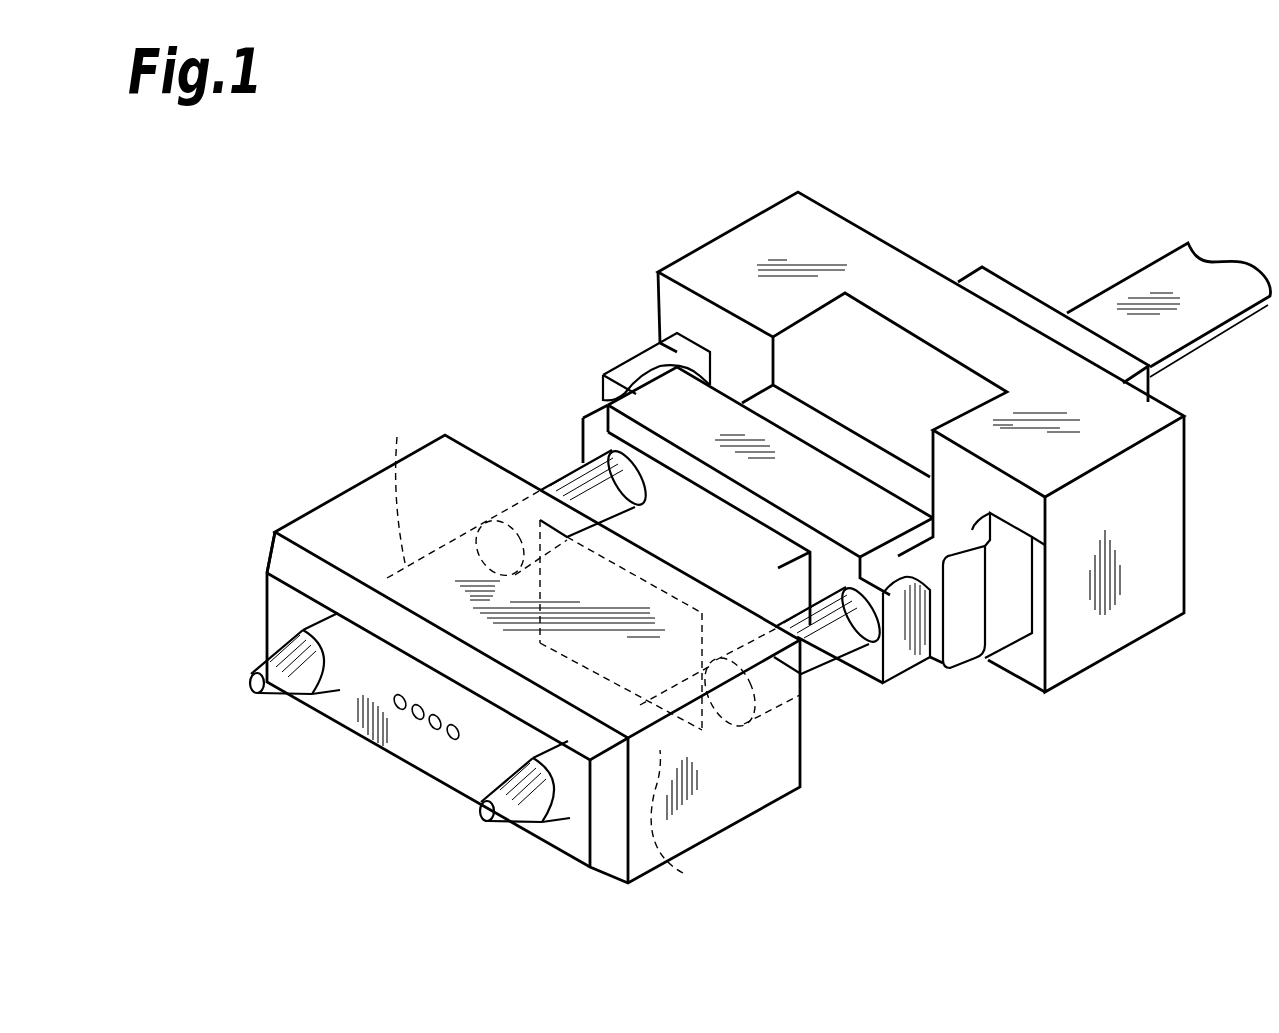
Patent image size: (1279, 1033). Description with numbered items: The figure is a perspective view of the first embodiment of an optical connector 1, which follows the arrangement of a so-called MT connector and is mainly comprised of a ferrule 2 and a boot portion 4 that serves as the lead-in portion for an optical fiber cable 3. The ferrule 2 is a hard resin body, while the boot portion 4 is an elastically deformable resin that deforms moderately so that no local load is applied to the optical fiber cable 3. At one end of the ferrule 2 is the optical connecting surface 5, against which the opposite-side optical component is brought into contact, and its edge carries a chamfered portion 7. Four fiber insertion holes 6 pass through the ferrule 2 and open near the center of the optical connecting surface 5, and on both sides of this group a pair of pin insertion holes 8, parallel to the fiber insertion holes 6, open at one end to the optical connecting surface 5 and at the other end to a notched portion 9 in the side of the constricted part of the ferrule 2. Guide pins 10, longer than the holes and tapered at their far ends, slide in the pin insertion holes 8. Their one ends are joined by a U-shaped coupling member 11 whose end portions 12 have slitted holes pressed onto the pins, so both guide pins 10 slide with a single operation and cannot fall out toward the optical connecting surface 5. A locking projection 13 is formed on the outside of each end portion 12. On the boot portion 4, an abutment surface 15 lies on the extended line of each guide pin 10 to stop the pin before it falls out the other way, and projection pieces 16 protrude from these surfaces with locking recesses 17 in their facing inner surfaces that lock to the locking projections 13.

The optical connector 1 is at (396, 320).
The ferrule 2 is at (768, 785).
The optical fiber cable 3 is at (1155, 275).
The boot portion 4 is at (1160, 412).
The optical connecting surface 5 is at (335, 704).
The fiber insertion holes 6 is at (436, 727).
The chamfered portion 7 is at (290, 555).
The pin insertion holes 8 is at (588, 653).
The notched portion 9 is at (542, 465).
The guide pins 10 is at (575, 460).
The coupling member 11 is at (665, 407).
The end portions 12 is at (597, 417).
The locking projection 13 is at (935, 657).
The abutment surface 15 is at (725, 325).
The projection pieces 16 is at (1003, 632).
The locking recesses 17 is at (1003, 625).